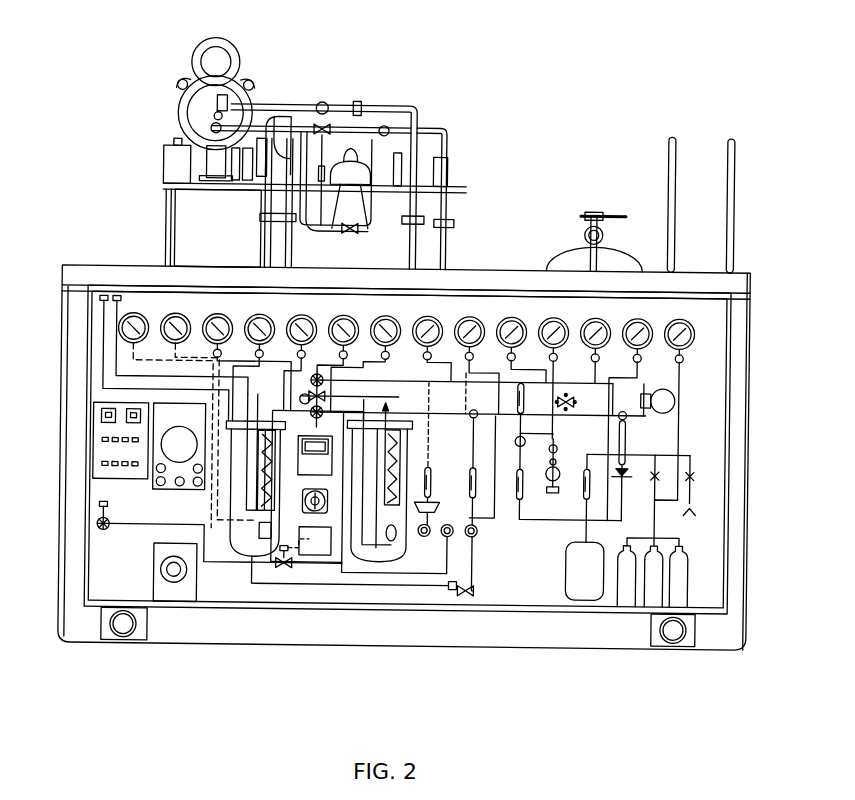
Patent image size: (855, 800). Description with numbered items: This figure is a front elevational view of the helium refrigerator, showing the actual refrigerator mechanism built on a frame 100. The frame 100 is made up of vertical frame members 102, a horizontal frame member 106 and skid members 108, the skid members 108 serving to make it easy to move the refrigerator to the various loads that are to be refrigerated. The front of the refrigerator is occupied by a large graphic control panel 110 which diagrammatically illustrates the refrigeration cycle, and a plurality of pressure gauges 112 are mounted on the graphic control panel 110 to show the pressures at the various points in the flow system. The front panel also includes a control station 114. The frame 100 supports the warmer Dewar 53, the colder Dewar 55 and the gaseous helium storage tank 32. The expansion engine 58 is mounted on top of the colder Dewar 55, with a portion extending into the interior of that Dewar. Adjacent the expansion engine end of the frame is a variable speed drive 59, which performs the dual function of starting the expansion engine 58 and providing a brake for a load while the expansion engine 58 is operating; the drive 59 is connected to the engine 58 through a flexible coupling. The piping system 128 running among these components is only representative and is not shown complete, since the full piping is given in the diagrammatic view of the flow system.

The frame 100 is at (746, 270).
The vertical frame members 102 is at (64, 480).
The horizontal frame member 106 is at (472, 281).
The skid members 108 is at (278, 620).
The graphic control panel 110 is at (697, 418).
The pressure gauges 112 is at (301, 316).
The control station 114 is at (96, 420).
The gaseous helium storage tank 32 is at (603, 256).
The warmer Dewar 53 is at (432, 213).
The colder Dewar 55 is at (203, 220).
The expansion engine 58 is at (224, 93).
The variable speed drive 59 is at (211, 62).
The piping system 128 is at (443, 127).